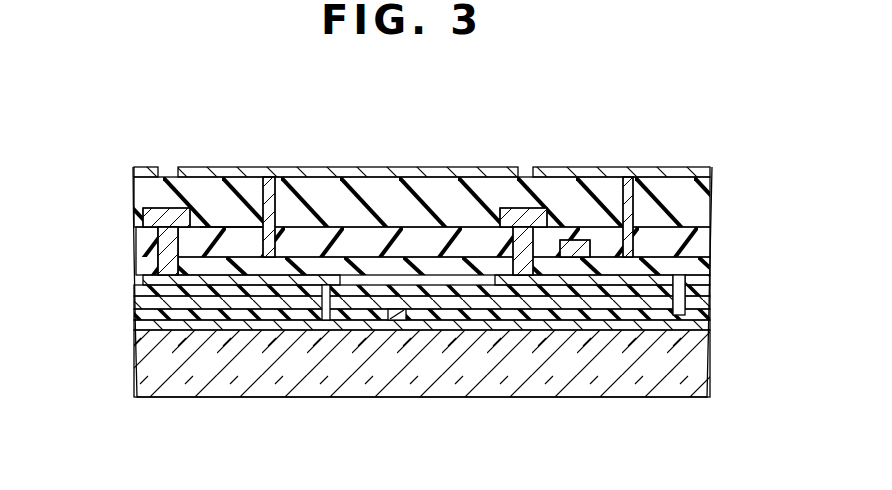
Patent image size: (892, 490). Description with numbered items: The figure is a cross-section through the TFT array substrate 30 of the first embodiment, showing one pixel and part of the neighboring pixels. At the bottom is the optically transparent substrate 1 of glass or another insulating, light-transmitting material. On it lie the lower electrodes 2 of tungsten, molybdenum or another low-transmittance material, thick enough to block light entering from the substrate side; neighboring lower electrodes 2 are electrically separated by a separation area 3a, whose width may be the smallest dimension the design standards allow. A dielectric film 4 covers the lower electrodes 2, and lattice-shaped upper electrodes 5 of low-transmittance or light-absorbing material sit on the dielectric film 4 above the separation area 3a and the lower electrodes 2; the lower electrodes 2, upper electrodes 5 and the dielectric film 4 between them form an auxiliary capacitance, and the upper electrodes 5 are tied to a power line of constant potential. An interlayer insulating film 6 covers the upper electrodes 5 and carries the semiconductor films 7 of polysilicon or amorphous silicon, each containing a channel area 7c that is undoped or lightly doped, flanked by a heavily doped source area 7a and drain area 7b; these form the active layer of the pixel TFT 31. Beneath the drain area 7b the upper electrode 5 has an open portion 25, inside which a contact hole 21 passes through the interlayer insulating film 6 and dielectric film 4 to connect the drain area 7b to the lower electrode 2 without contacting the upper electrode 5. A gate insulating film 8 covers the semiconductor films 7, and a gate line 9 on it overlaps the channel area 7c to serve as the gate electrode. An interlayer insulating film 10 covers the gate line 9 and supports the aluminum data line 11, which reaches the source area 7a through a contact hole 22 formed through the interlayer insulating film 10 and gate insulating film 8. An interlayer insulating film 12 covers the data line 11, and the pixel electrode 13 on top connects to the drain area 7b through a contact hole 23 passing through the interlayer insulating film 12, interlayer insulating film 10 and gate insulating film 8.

The optically transparent substrate 1 is at (710, 366).
The lower electrodes 2 is at (712, 328).
The separation area 3a is at (398, 325).
The dielectric film 4 is at (712, 314).
The upper electrodes 5 is at (712, 298).
The interlayer insulating film 6 is at (134, 292).
The semiconductor films 7 is at (703, 268).
The source area 7a is at (172, 285).
The drain area 7b is at (290, 282).
The channel area 7c is at (225, 285).
The gate insulating film 8 is at (158, 259).
The gate lines 9 is at (592, 242).
The interlayer insulating film 10 is at (147, 234).
The data lines 11 is at (516, 222).
The interlayer insulating film 12 is at (152, 190).
The pixel electrodes 13 is at (345, 176).
The contact hole 21 is at (680, 318).
The contact hole 22 is at (500, 212).
The contact hole 23 is at (625, 225).
The open portion 25 is at (333, 318).
The TFT array substrate 30 is at (689, 145).
The pixel TFT 31 is at (228, 224).